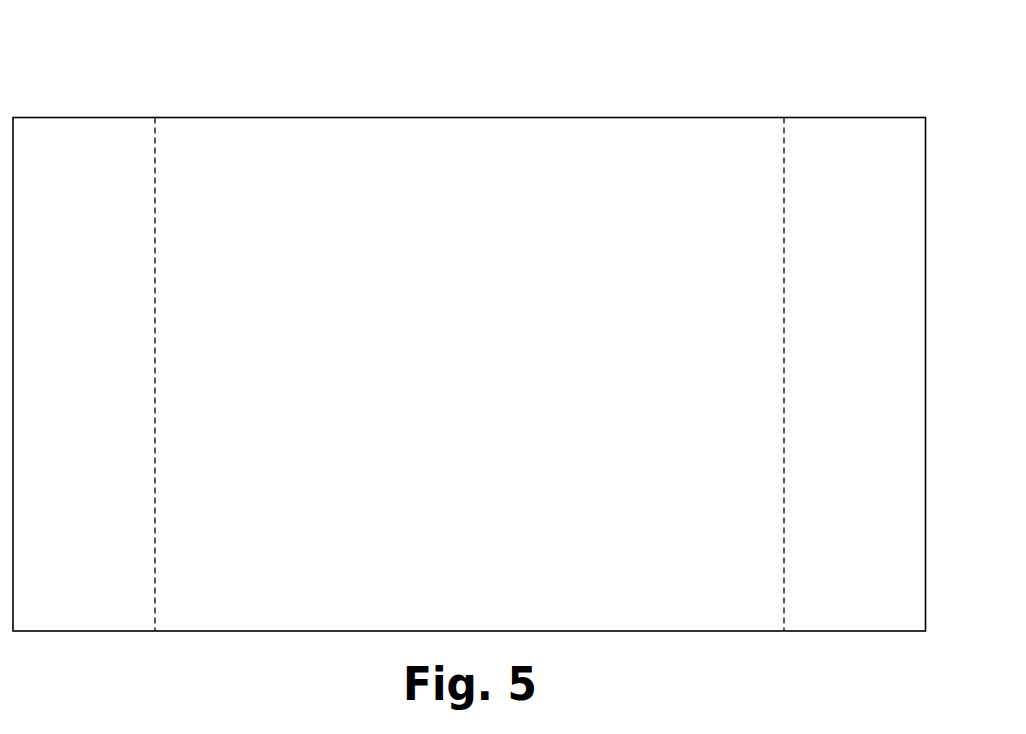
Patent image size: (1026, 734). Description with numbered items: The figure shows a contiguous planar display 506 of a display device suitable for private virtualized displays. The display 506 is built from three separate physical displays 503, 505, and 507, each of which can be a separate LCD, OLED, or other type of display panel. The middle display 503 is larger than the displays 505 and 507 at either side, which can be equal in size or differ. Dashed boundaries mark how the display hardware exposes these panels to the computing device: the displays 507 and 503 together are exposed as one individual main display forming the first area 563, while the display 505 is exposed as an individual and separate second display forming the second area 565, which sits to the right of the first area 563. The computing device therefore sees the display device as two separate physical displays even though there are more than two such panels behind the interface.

The display 506 is at (130, 76).
The first area 563 is at (289, 116).
The second area 565 is at (887, 116).
The display 507 is at (102, 386).
The middle display 503 is at (488, 388).
The display 505 is at (873, 386).